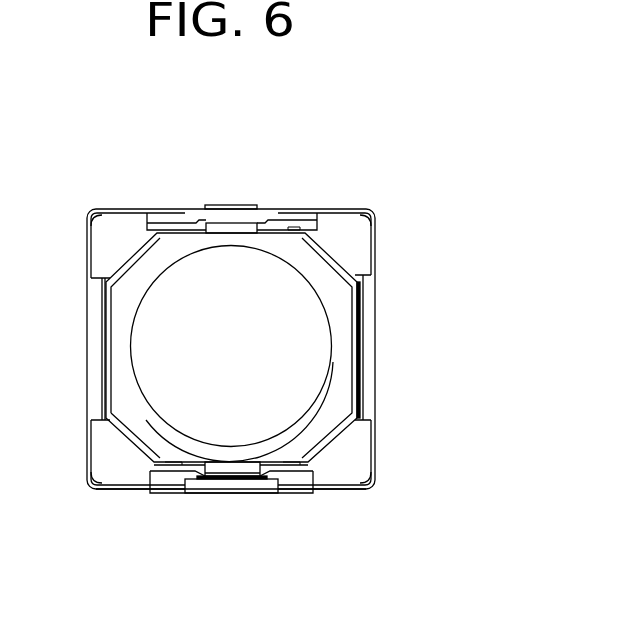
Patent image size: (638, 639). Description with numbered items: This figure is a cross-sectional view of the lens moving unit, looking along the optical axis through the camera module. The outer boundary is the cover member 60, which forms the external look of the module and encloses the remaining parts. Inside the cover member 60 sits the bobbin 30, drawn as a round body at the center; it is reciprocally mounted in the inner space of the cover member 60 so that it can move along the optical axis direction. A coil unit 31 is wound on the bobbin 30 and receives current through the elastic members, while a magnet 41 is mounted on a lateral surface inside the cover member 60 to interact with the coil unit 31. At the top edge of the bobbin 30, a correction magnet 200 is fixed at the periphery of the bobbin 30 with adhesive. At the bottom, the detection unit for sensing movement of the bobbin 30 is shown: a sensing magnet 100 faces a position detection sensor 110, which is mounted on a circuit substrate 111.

The cover member 60 is at (377, 238).
The correction magnet 200 is at (232, 230).
The coil unit 31 is at (343, 432).
The magnet 41 is at (365, 360).
The bobbin 30 is at (337, 375).
The sensing magnet 100 is at (250, 468).
The position detection sensor 110 is at (197, 486).
The circuit substrate 111 is at (290, 495).